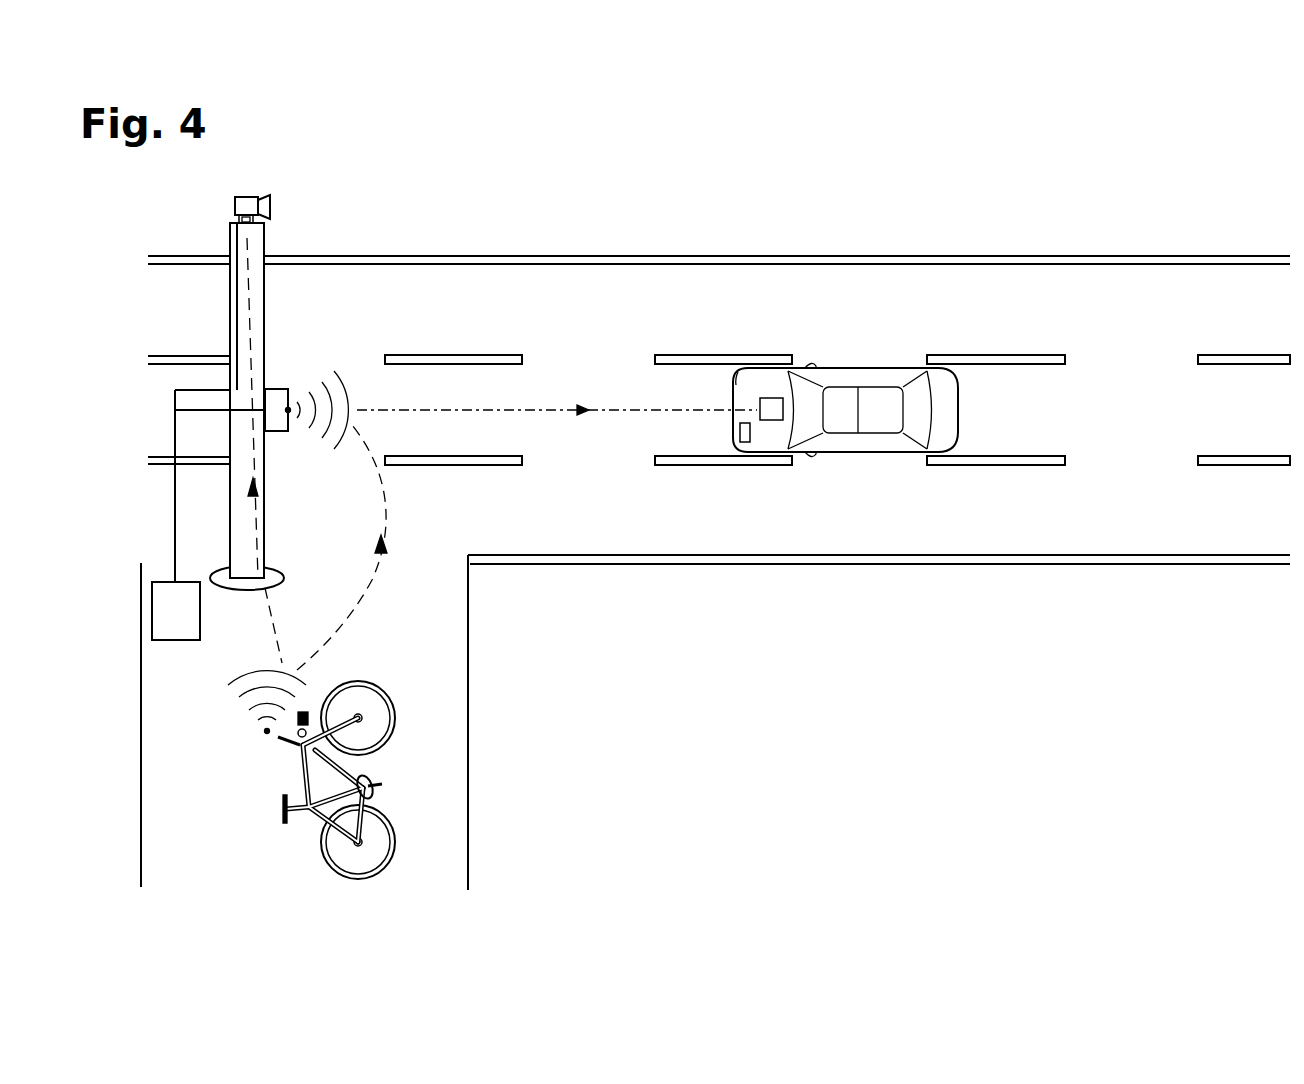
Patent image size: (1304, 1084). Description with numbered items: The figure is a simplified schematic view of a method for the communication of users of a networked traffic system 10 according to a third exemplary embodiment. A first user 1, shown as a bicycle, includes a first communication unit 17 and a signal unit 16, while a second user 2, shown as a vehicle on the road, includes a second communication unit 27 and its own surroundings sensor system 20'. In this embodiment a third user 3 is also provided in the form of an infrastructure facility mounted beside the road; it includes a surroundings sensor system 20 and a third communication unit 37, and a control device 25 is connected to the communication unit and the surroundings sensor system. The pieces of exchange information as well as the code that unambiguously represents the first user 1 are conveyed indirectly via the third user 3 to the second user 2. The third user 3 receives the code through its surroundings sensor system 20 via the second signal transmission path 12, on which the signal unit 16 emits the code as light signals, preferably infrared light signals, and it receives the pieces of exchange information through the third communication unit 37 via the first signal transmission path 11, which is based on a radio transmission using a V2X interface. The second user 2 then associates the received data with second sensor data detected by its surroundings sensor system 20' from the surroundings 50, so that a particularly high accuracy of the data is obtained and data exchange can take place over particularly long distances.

The first user 1 is at (450, 765).
The second user 2 is at (840, 390).
The third user 3 is at (249, 421).
The networked traffic system 10 is at (1116, 186).
The first signal transmission path 11 is at (383, 502).
The second signal transmission path 12 is at (237, 290).
The signal unit 16 is at (295, 748).
The first communication unit 17 is at (264, 733).
The surroundings sensor system 20 is at (211, 208).
The surroundings sensor system 20' is at (753, 455).
The control device 25 is at (172, 640).
The second communication unit 27 is at (775, 421).
The third communication unit 37 is at (290, 420).
The surroundings 50 is at (754, 298).